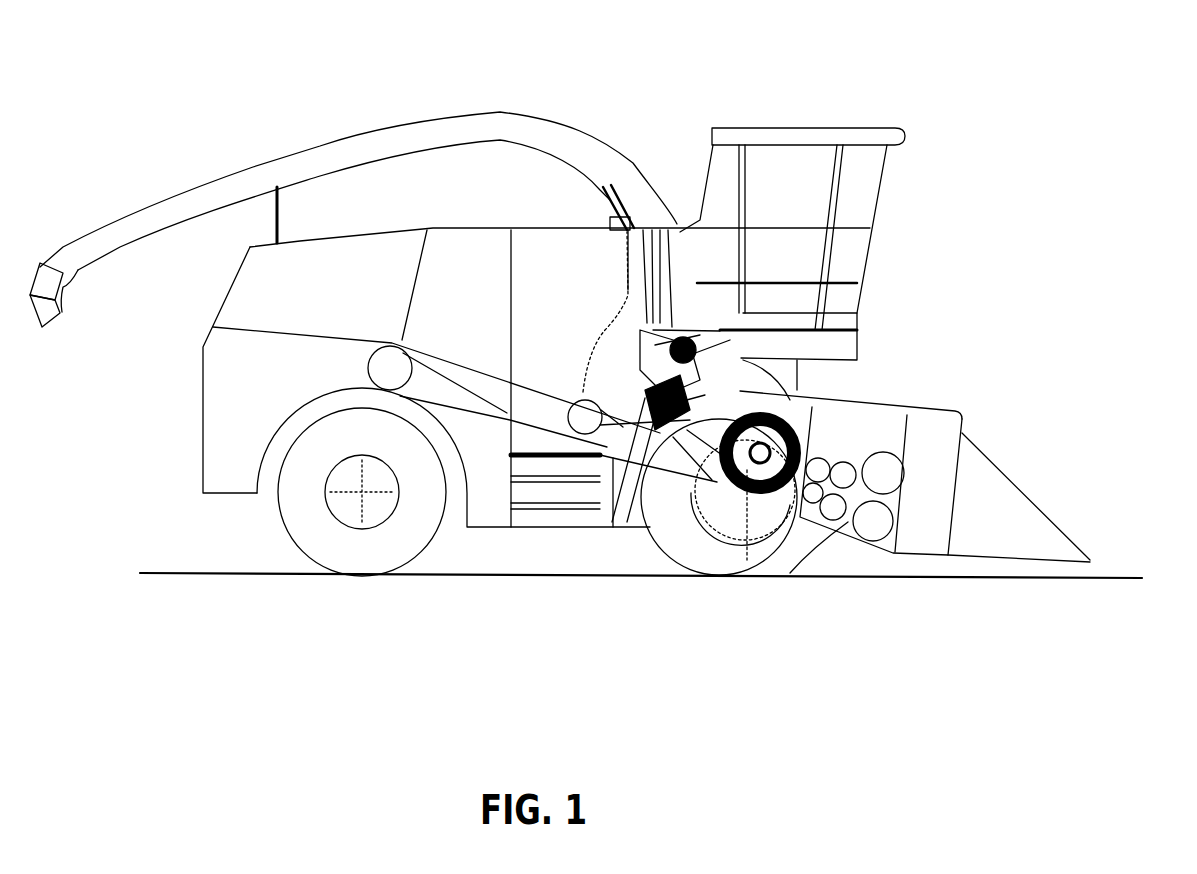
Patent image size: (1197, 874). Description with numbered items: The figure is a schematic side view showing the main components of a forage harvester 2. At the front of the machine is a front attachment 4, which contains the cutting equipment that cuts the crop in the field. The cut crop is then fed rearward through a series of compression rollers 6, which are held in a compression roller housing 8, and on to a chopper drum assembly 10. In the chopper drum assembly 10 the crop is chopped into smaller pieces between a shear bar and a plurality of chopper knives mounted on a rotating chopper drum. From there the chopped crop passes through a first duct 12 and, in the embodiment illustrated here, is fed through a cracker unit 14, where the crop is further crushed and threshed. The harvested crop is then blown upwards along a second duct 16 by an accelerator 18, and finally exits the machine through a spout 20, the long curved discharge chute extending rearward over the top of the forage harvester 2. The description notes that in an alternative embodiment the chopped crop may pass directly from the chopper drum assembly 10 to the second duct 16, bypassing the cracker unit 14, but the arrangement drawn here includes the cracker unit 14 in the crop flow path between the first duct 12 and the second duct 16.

The forage harvester 2 is at (814, 119).
The front attachment 4 is at (1000, 502).
The compression rollers 6 is at (883, 475).
The compression roller housing 8 is at (863, 428).
The chopper drum assembly 10 is at (813, 492).
The first duct 12 is at (717, 478).
The cracker unit 14 is at (627, 397).
The second duct 16 is at (660, 330).
The accelerator 18 is at (857, 314).
The spout 20 is at (430, 128).